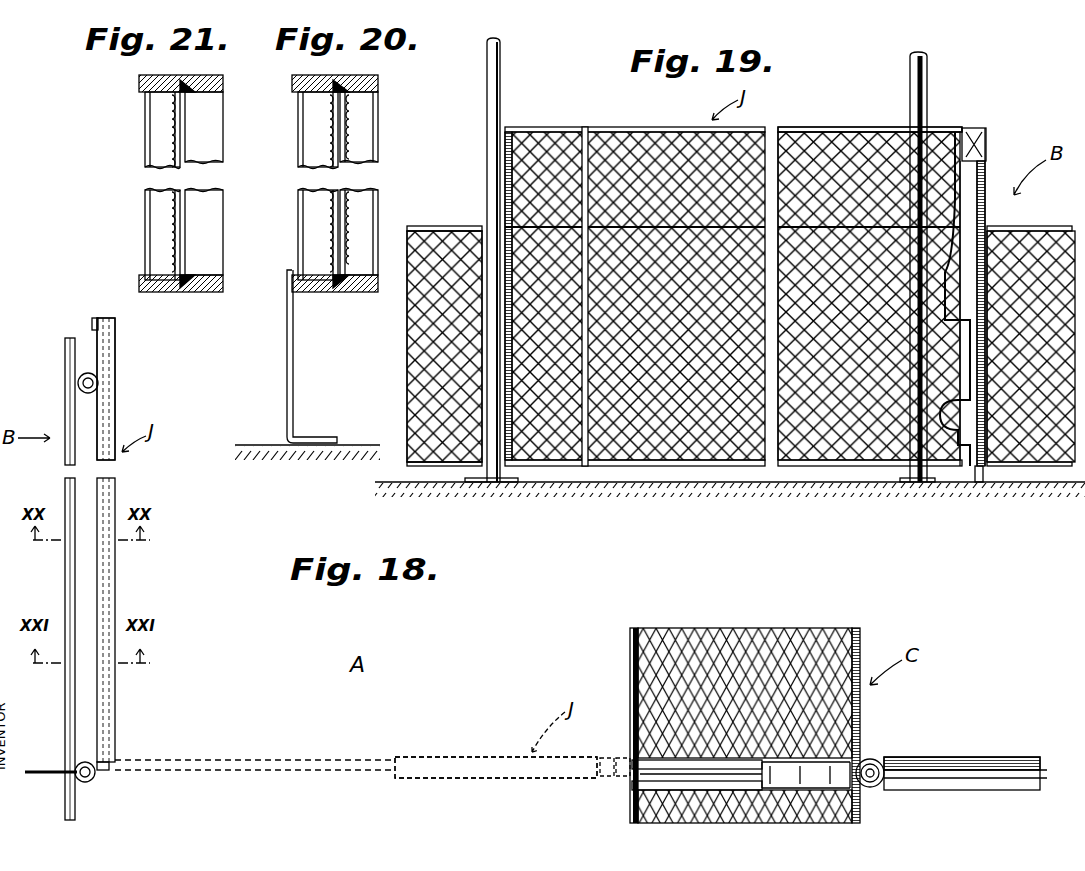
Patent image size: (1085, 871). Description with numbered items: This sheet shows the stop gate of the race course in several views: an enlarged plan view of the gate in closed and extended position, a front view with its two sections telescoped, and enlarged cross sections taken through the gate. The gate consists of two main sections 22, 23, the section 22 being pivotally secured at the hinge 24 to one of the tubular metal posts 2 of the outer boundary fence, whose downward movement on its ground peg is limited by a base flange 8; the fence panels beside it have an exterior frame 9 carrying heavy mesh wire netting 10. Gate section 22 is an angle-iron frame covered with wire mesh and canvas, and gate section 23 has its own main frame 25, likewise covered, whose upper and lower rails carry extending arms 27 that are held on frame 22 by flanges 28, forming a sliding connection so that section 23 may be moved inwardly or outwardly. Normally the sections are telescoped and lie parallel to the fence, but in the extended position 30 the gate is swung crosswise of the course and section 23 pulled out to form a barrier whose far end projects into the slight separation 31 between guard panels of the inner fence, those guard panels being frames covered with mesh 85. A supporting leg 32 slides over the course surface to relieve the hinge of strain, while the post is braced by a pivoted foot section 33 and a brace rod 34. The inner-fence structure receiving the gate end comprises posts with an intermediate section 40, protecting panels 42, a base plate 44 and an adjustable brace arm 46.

In FIG. 19, the tubular metal post 2 is at (500, 76).
In FIG. 18, the tubular metal post 2 is at (96, 375).
In FIG. 19, the base flange 8 is at (935, 484).
In FIG. 19, the exterior frame 9 is at (425, 230).
In FIG. 18, the exterior frame 9 is at (66, 396).
In FIG. 19, the heavy mesh wire netting 10 is at (462, 232).
In FIG. 21, the gate section 22 is at (146, 132).
In FIG. 20, the gate section 22 is at (300, 140).
In FIG. 19, the gate section 22 is at (576, 130).
In FIG. 18, the gate section 22 is at (100, 418).
In FIG. 21, the gate section 23 is at (214, 135).
In FIG. 20, the gate section 23 is at (378, 136).
In FIG. 19, the gate section 23 is at (876, 126).
In FIG. 18, the gate section 23 is at (116, 377).
In FIG. 19, the hinge 24 is at (490, 176).
In FIG. 18, the hinge 24 is at (104, 778).
In FIG. 21, the main frame 25 is at (196, 95).
In FIG. 20, the main frame 25 is at (376, 100).
In FIG. 19, the main frame 25 is at (942, 128).
In FIG. 21, the extending arm 27 is at (186, 80).
In FIG. 20, the extending arm 27 is at (343, 80).
In FIG. 19, the extending arm 27 is at (528, 126).
In FIG. 18, the extending arm 27 is at (116, 566).
In FIG. 21, the flange 28 is at (143, 88).
In FIG. 20, the flange 28 is at (296, 90).
In FIG. 18, the extended gate position 30 is at (467, 748).
In FIG. 18, the guard panel separation 31 is at (642, 810).
In FIG. 20, the supporting leg 32 is at (293, 345).
In FIG. 19, the supporting leg 32 is at (982, 484).
In FIG. 18, the supporting leg 32 is at (94, 318).
In FIG. 19, the pivoted foot section 33 is at (480, 484).
In FIG. 18, the brace rod 34 is at (50, 770).
In FIG. 18, the intermediate section 40 is at (882, 762).
In FIG. 18, the protecting panel 42 is at (630, 652).
In FIG. 18, the base plate 44 is at (952, 760).
In FIG. 18, the brace arm 46 is at (945, 770).
In FIG. 18, the mesh 85 is at (710, 638).